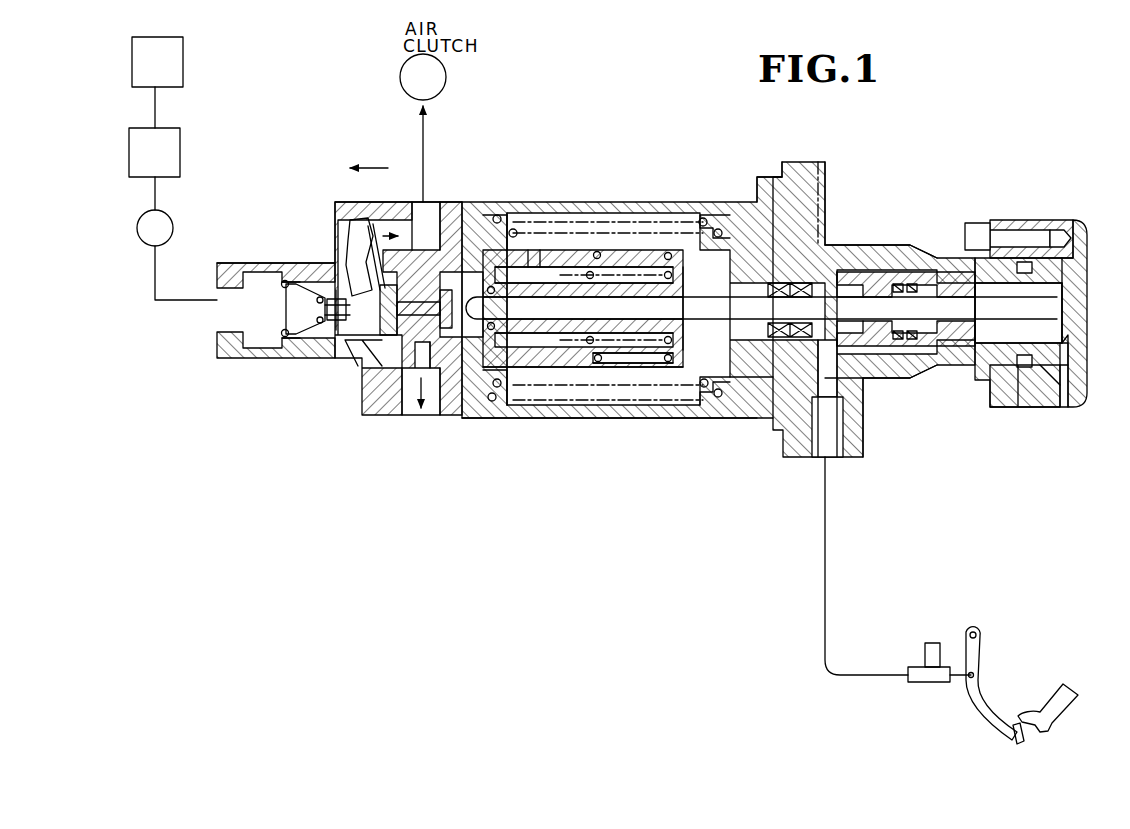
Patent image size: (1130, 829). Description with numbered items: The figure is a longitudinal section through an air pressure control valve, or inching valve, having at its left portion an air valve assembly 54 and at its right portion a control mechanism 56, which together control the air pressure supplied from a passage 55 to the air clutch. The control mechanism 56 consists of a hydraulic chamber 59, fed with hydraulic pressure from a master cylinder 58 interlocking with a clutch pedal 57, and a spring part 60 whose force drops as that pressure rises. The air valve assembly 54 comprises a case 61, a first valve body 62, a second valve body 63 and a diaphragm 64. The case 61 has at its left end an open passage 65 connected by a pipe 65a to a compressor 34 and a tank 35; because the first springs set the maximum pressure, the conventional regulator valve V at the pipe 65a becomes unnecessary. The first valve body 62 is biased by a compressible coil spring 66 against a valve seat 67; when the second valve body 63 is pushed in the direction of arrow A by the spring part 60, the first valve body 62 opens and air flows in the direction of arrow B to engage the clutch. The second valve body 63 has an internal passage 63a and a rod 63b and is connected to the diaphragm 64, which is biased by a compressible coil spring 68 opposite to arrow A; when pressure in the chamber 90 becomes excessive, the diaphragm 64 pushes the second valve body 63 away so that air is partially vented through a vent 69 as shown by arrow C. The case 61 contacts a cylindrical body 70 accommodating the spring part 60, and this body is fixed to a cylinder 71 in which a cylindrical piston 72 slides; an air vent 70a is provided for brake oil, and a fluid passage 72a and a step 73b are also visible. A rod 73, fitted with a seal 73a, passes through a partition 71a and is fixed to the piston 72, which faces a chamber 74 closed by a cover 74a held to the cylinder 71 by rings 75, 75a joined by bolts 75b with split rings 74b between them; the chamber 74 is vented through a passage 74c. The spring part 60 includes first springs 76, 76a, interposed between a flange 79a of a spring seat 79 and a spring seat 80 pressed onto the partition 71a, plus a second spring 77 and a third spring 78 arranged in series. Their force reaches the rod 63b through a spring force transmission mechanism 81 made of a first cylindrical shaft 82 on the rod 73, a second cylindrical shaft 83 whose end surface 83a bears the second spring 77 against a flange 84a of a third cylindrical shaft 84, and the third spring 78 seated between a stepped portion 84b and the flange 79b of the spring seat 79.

The compressor 34 is at (132, 68).
The tank 35 is at (129, 154).
The regulator valve V is at (137, 228).
The pipe 65a is at (155, 298).
The open passage 65 is at (228, 315).
The first valve body 62 is at (284, 335).
The compressible coil spring 68 is at (330, 326).
The chamber 90 is at (355, 345).
The diaphragm 64 is at (372, 362).
The second valve body 63 is at (380, 415).
The internal passage 63a is at (465, 212).
The rod 63b is at (402, 414).
The body or case 61 is at (340, 262).
The valve seat 67 is at (348, 232).
The compressible coil spring 66 is at (300, 265).
The passage 55 is at (412, 215).
The arrow A is at (369, 158).
The arrow B is at (398, 237).
The arrow C is at (420, 414).
The vent 69 is at (432, 412).
The cylindrical body 70 is at (500, 210).
The air vent 70a is at (825, 165).
The cylinder 71 is at (902, 255).
The partition 71a is at (818, 215).
The housing step 73b is at (772, 282).
The spring seat 80 is at (742, 398).
The fluid passage 72a is at (852, 365).
The spring seat 79 is at (676, 368).
The flange 79a is at (480, 400).
The flange 79b is at (685, 264).
The rod 73 is at (740, 320).
The seal 73a is at (532, 265).
The second spring 77 is at (652, 283).
The third spring 78 is at (676, 270).
The spring force transmission mechanism 81 is at (702, 270).
The first cylindrical shaft 82 is at (594, 268).
The second cylindrical shaft 83 is at (514, 262).
The end surface 83a is at (632, 258).
The third cylindrical shaft 84 is at (558, 268).
The flange 84a is at (686, 368).
The stepped portion 84b is at (612, 347).
The first spring 76 is at (512, 410).
The first spring 76a is at (560, 410).
The spring part 60 is at (592, 418).
The air valve assembly 54 is at (306, 452).
The control mechanism 56 is at (550, 468).
The hydraulic chamber 59 is at (858, 284).
The cylindrical piston 72 is at (955, 272).
The chamber 74 is at (1042, 296).
The cover 74a is at (1078, 357).
The split rings 74b is at (992, 378).
The passage 74c is at (1075, 393).
The ring 75 is at (1000, 407).
The ring 75a is at (1050, 405).
The bolts 75b is at (1010, 226).
The master cylinder 58 is at (922, 683).
The clutch pedal 57 is at (1026, 745).